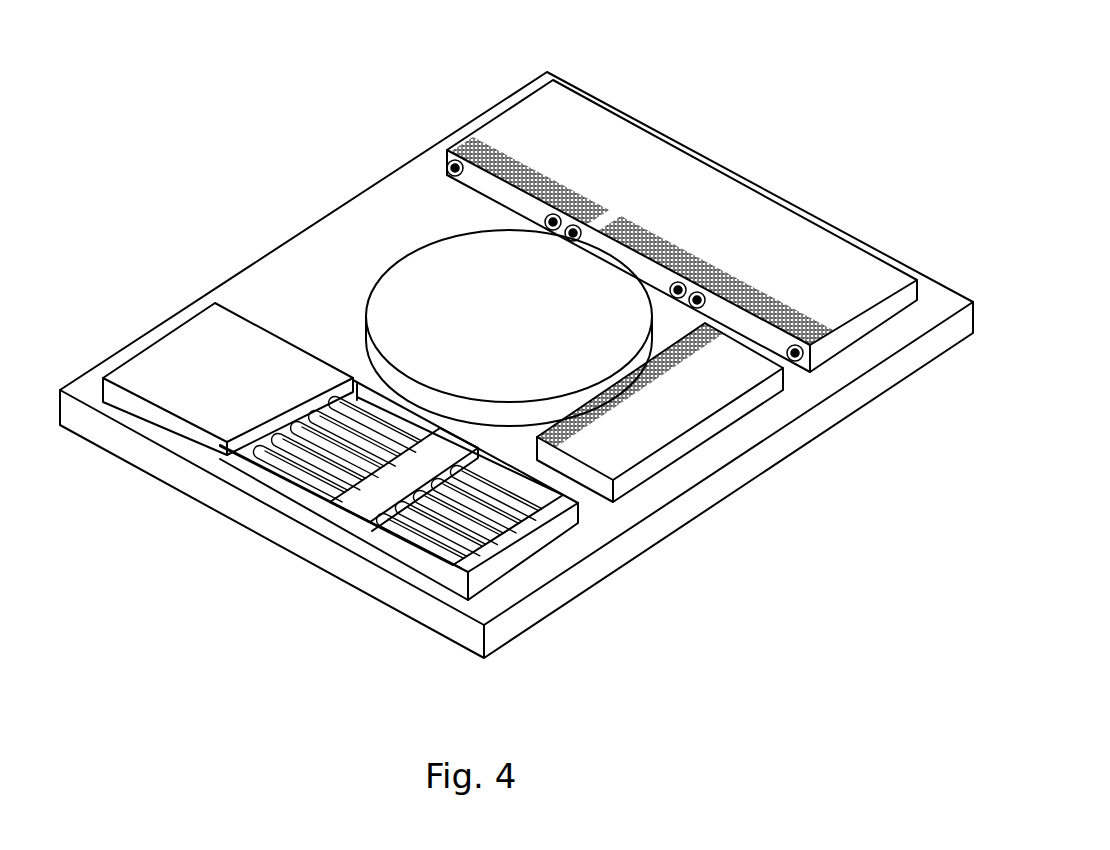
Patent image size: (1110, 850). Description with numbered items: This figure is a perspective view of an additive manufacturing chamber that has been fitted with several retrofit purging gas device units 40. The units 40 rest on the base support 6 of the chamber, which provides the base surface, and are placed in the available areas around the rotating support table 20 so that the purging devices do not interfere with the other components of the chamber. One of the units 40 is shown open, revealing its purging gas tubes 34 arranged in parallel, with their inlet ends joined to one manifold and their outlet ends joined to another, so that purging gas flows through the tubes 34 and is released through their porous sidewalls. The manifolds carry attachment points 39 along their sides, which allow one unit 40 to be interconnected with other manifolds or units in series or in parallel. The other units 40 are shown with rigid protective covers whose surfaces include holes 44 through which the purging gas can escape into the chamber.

The base support 6 is at (537, 572).
The rotating support table 20 is at (402, 288).
The purging gas tubes 34 is at (297, 448).
The attachment points 39 is at (445, 158).
The retrofit purging gas device unit 40 is at (575, 103).
The holes 44 is at (605, 200).